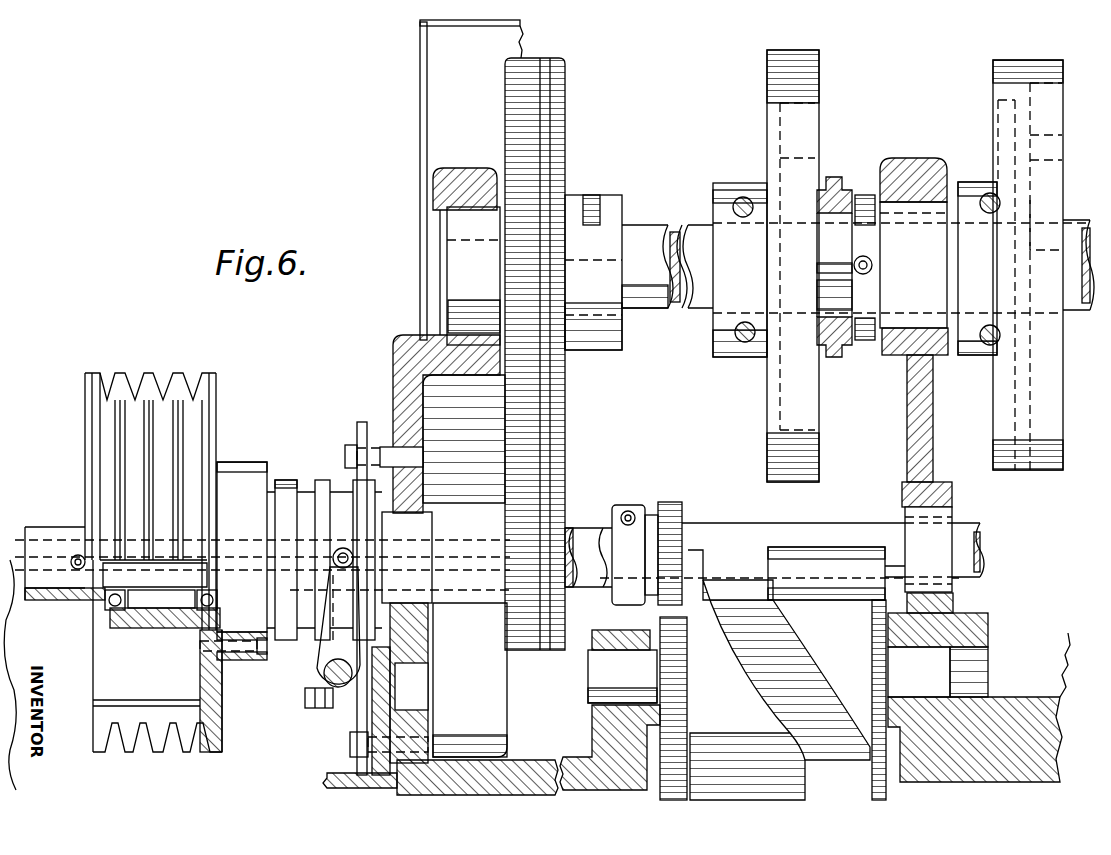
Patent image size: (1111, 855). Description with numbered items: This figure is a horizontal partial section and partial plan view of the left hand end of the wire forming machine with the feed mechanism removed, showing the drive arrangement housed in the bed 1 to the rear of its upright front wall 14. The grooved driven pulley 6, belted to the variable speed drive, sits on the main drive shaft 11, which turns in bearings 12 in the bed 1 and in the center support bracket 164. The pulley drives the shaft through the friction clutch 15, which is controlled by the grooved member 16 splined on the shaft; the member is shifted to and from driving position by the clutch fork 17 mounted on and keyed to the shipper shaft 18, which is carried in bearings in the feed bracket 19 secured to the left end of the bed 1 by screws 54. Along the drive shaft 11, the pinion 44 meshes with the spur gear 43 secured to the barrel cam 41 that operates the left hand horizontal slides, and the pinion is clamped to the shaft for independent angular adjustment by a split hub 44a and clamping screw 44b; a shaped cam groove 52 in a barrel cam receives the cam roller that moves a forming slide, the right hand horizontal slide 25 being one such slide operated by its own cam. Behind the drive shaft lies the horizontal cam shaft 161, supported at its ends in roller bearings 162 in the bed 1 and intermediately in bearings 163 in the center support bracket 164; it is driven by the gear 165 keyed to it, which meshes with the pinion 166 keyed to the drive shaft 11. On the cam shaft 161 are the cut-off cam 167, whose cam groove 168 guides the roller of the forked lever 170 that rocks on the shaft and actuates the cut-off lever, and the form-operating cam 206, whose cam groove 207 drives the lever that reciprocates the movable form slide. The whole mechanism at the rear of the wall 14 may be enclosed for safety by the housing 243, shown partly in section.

The bed 1 is at (518, 793).
The driven pulley 6 is at (82, 396).
The main drive shaft 11 is at (718, 534).
The bearing 12 is at (410, 525).
The front wall 14 is at (462, 790).
The friction clutch 15 is at (276, 449).
The grooved member 16 is at (288, 482).
The clutch fork 17 is at (324, 634).
The shipper shaft 18 is at (325, 675).
The feed bracket 19 is at (366, 426).
The right hand horizontal slide 25 is at (14, 538).
The cam 41 is at (810, 561).
The spur gear 43 is at (689, 733).
The pinion 44 is at (670, 503).
The split hub 44a is at (631, 601).
The clamping screw 44b is at (628, 511).
The cam groove 52 is at (775, 631).
The screws 54 is at (351, 448).
The cam shaft 161 is at (650, 238).
The roller bearing 162 is at (462, 215).
The intermediate bearing 163 is at (908, 210).
The center support bracket 164 is at (926, 443).
The gear 165 is at (566, 153).
The pinion 166 is at (566, 509).
The cut-off cam 167 is at (768, 88).
The cam groove 168 is at (800, 429).
The forked lever 170 is at (840, 181).
The form-operating cam 206 is at (1040, 470).
The cam groove 207 is at (1062, 373).
The housing 243 is at (418, 169).